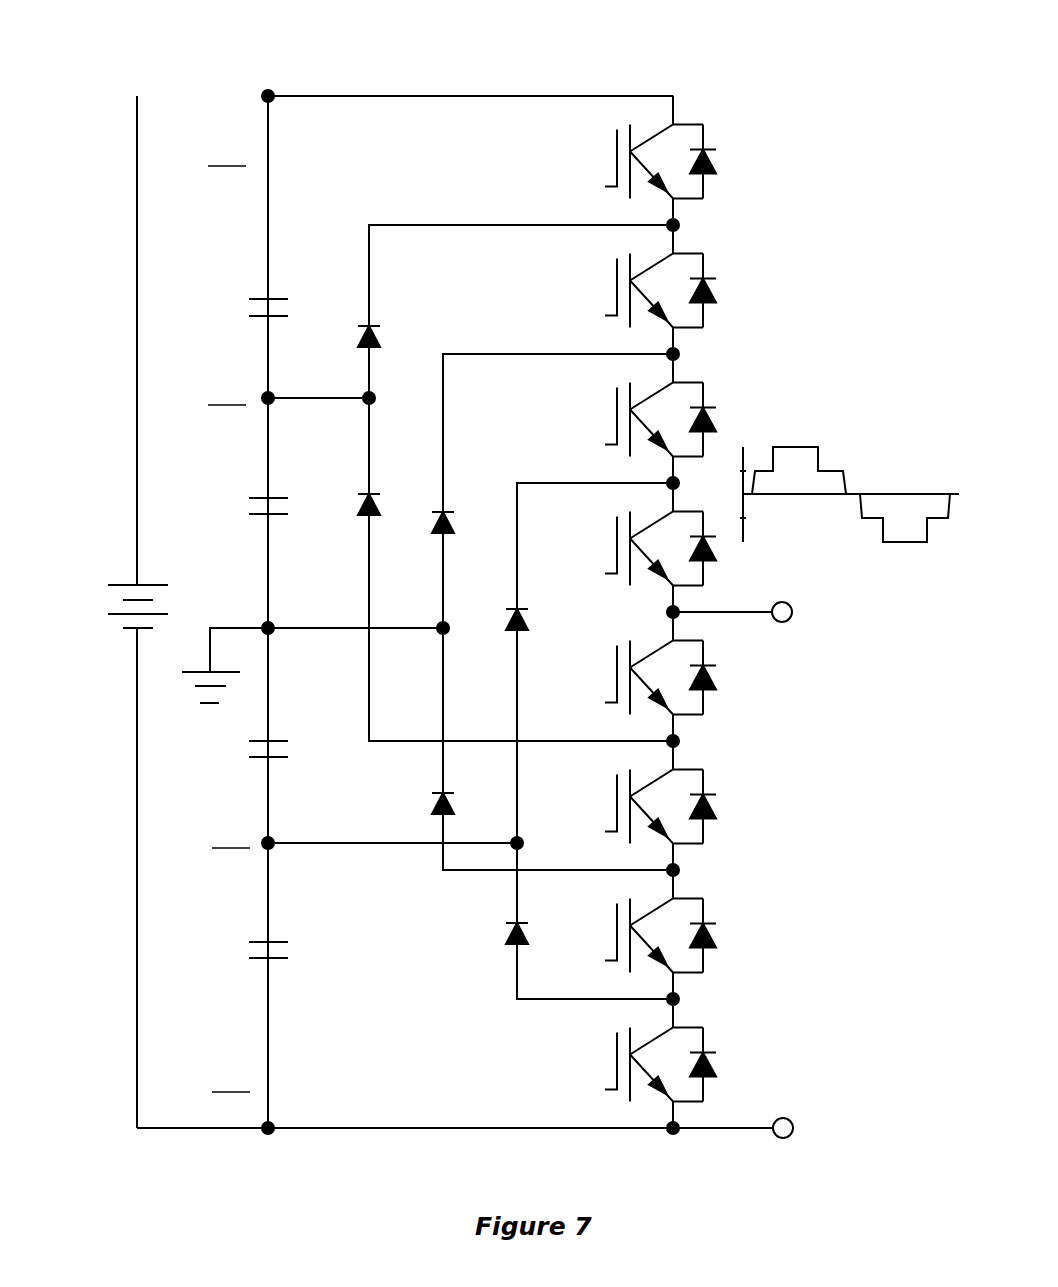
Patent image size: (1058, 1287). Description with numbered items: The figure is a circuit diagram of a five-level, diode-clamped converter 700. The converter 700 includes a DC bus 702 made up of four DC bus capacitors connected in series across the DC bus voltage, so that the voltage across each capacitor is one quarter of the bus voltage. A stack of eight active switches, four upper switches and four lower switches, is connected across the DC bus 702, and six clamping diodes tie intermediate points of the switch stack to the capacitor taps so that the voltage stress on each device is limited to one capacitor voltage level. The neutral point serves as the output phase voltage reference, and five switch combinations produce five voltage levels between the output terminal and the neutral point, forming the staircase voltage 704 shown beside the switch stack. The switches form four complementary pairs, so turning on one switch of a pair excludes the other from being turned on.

The diode-clamped converter 700 is at (424, 33).
The DC bus 702 is at (215, 257).
The staircase voltage 704 is at (877, 424).